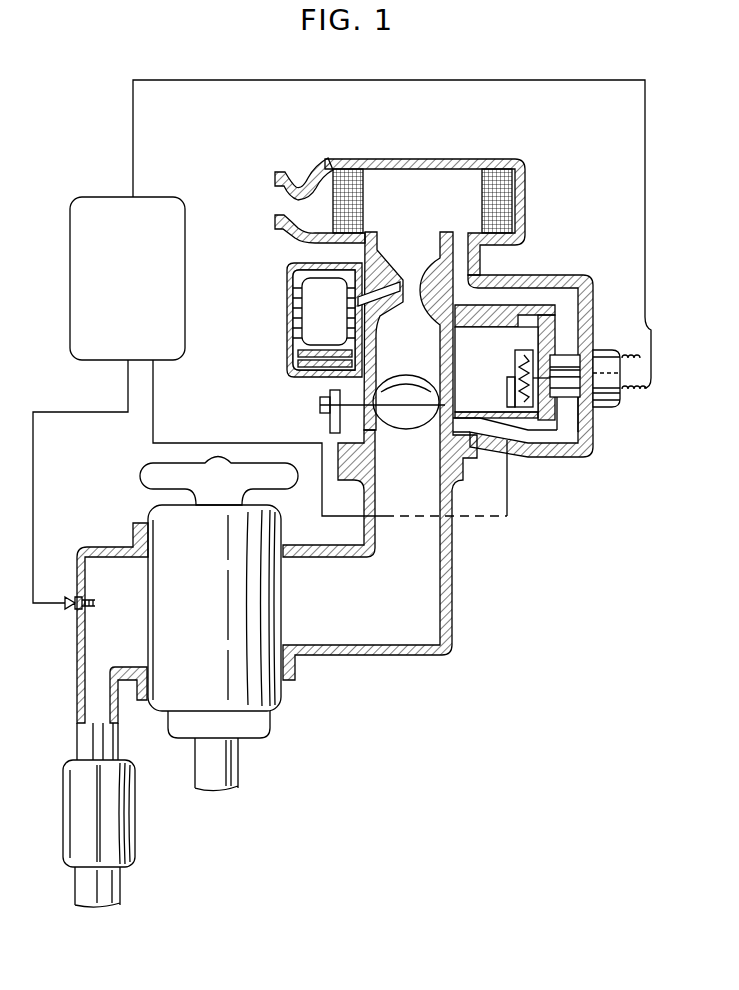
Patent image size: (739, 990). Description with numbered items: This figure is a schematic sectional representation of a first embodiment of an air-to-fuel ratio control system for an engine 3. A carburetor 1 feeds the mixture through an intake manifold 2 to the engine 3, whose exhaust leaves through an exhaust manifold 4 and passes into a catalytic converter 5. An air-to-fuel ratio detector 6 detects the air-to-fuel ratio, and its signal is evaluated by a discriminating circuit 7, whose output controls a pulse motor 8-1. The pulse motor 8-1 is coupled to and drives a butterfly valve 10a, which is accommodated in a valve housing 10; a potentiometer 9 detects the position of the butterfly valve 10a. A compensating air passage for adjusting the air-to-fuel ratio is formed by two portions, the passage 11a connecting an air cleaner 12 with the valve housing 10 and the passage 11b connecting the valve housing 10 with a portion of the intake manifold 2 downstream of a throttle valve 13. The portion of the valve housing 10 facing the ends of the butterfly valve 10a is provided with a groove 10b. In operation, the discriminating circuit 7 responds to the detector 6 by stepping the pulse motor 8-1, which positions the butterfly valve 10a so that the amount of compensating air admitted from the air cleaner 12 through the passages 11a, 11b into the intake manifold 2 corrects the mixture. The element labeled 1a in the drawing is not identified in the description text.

The carburetor 1 is at (320, 303).
The nozzle flapper 1a is at (401, 284).
The intake manifold 2 is at (385, 657).
The engine 3 is at (178, 717).
The exhaust manifold 4 is at (77, 688).
The catalystic converter 5 is at (73, 845).
The air-to-fuel ratio detector 6 is at (72, 608).
The discriminating circuit 7 is at (153, 197).
The pulse motor 8-1 is at (612, 402).
The potentiometer 9 is at (515, 386).
The valve housing 10 is at (537, 334).
The butterfly valve 10a is at (570, 380).
The groove 10b is at (583, 410).
The compensating air passage 11a is at (543, 298).
The compensating air passage 11b is at (565, 433).
The air cleaner 12 is at (425, 185).
The throttle valve 13 is at (406, 418).